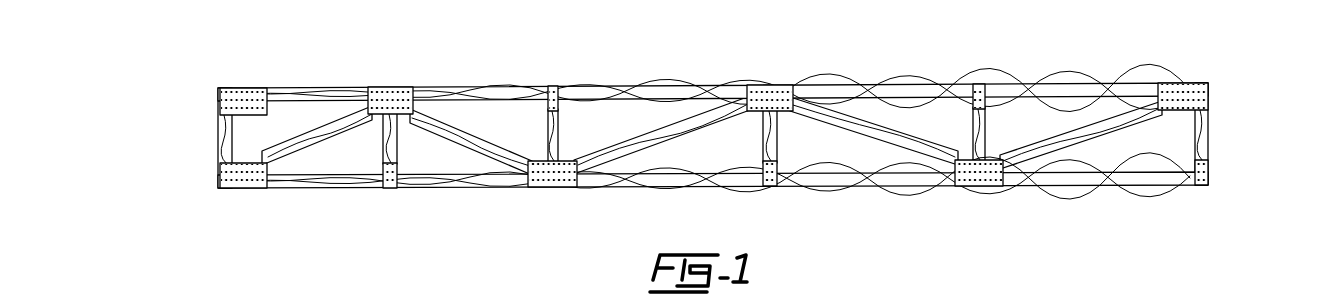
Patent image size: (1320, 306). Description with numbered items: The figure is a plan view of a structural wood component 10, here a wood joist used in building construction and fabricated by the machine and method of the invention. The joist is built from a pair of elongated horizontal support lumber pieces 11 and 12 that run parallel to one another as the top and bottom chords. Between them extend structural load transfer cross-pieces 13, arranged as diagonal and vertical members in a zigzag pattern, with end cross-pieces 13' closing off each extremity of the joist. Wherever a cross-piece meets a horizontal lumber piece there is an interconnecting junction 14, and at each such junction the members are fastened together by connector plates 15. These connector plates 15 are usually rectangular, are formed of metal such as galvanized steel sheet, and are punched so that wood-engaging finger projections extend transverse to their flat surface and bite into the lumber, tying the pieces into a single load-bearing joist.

The structural wood component 10 is at (707, 148).
The elongated horizontal support lumber piece 11 is at (610, 92).
The elongated horizontal support lumber piece 12 is at (850, 186).
The structural load transfer cross-piece 13 is at (712, 107).
The structural load transfer cross-piece 13' is at (707, 129).
The interconnecting junction 14 is at (388, 90).
The connector plate 15 is at (553, 95).